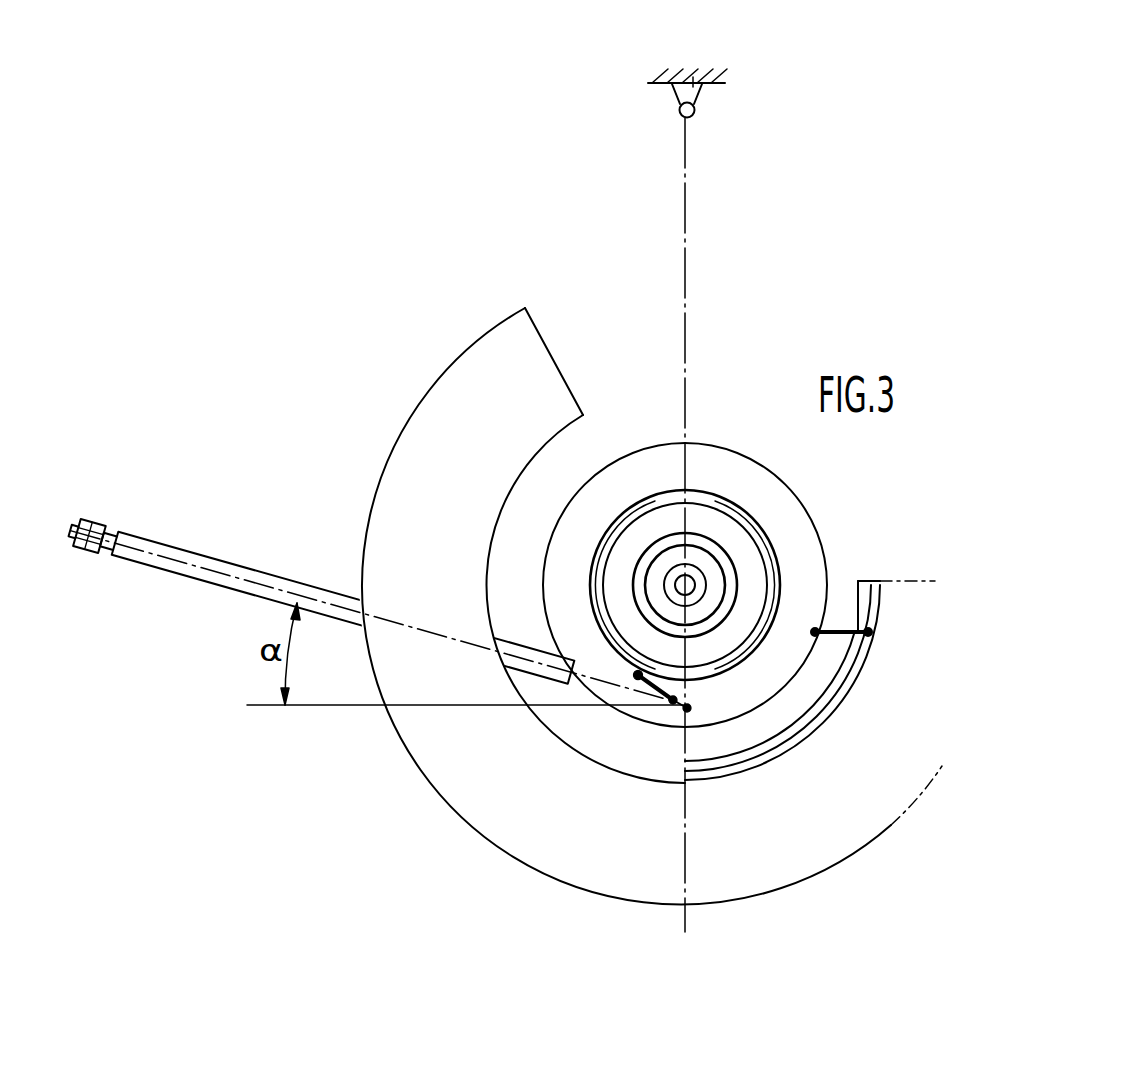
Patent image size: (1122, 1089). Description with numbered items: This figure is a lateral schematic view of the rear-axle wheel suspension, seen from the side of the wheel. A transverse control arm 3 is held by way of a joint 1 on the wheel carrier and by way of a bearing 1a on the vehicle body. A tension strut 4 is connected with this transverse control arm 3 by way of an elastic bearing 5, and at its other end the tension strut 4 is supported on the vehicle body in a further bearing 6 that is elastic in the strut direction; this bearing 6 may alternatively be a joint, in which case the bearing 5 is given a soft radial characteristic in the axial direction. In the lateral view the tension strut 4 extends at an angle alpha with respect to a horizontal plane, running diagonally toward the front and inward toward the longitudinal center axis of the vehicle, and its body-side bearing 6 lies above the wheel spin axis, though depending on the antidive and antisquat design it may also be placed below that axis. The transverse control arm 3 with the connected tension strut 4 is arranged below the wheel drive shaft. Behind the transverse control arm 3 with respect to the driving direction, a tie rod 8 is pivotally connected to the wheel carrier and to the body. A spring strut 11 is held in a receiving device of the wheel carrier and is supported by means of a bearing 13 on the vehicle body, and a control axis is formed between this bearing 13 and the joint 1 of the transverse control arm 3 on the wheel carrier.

The joint 1 is at (689, 708).
The bearing 1a is at (638, 673).
The transverse control arm 3 is at (650, 695).
The tension strut 4 is at (217, 572).
The elastic bearing 5 is at (663, 710).
The bearing 6 is at (96, 525).
The tie rod 8 is at (843, 628).
The spring strut 11 is at (712, 187).
The bearing 13 is at (697, 80).